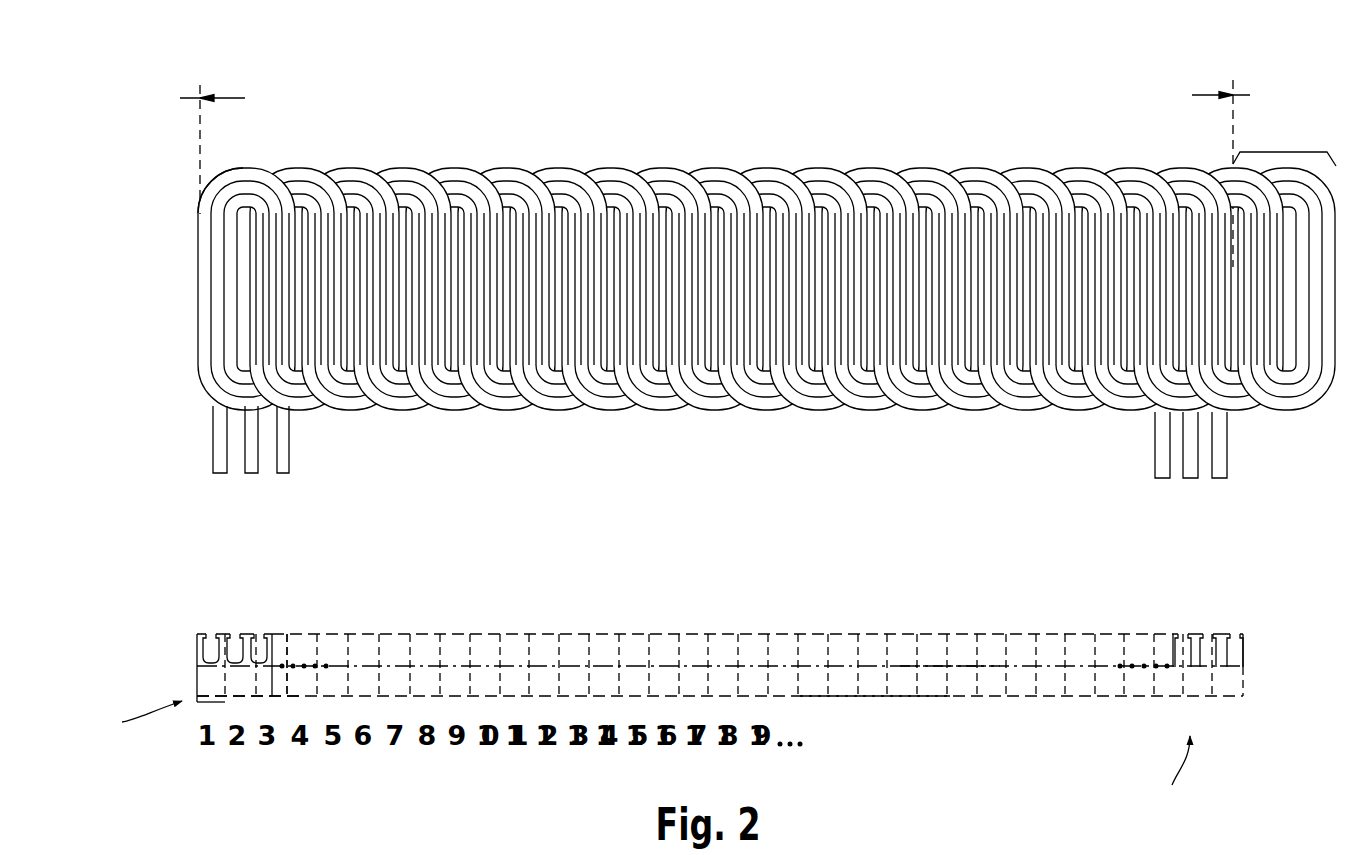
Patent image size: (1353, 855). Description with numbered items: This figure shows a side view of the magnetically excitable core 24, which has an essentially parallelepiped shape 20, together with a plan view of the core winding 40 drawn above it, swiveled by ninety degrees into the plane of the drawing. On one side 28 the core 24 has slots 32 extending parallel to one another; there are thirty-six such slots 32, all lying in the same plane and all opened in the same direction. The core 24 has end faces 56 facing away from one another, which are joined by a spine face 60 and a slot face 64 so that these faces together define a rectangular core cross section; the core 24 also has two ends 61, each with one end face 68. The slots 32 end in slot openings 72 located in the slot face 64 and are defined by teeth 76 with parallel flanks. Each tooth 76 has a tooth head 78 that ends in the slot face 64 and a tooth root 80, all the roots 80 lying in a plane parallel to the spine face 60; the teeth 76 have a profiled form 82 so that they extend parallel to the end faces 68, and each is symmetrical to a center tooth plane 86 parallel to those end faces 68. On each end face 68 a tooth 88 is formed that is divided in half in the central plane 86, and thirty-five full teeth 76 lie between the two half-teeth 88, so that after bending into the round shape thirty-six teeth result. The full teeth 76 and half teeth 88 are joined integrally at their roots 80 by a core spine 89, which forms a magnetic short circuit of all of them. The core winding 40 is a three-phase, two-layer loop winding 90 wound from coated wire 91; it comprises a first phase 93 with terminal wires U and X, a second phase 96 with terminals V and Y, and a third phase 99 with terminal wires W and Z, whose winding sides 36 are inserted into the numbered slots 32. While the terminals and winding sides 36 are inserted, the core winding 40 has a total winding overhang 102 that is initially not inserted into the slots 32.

The parallelepiped shape 20 is at (1223, 688).
The core 24 is at (762, 707).
The side 28 is at (300, 634).
The slots 32 is at (1225, 645).
The winding sides 36 is at (184, 270).
The core winding 40 is at (766, 253).
The end faces 56 is at (968, 686).
The spine face 60 is at (865, 697).
The ends 61 is at (643, 757).
The slot face 64 is at (1183, 637).
The end face 68 is at (197, 675).
The slot openings 72 is at (1212, 637).
The teeth 76 is at (222, 637).
The tooth head 78 is at (248, 637).
The tooth root 80 is at (270, 650).
The profiled form 82 is at (235, 637).
The center tooth plane 86 is at (222, 702).
The half-tooth 88 is at (205, 637).
The core spine 89 is at (245, 688).
The three-phase two-layer loop winding 90 is at (592, 156).
The coated wire 91 is at (253, 168).
The first phase 93 is at (213, 417).
The second phase 96 is at (283, 435).
The third phase 99 is at (252, 455).
The total winding overhang 102 is at (1277, 152).